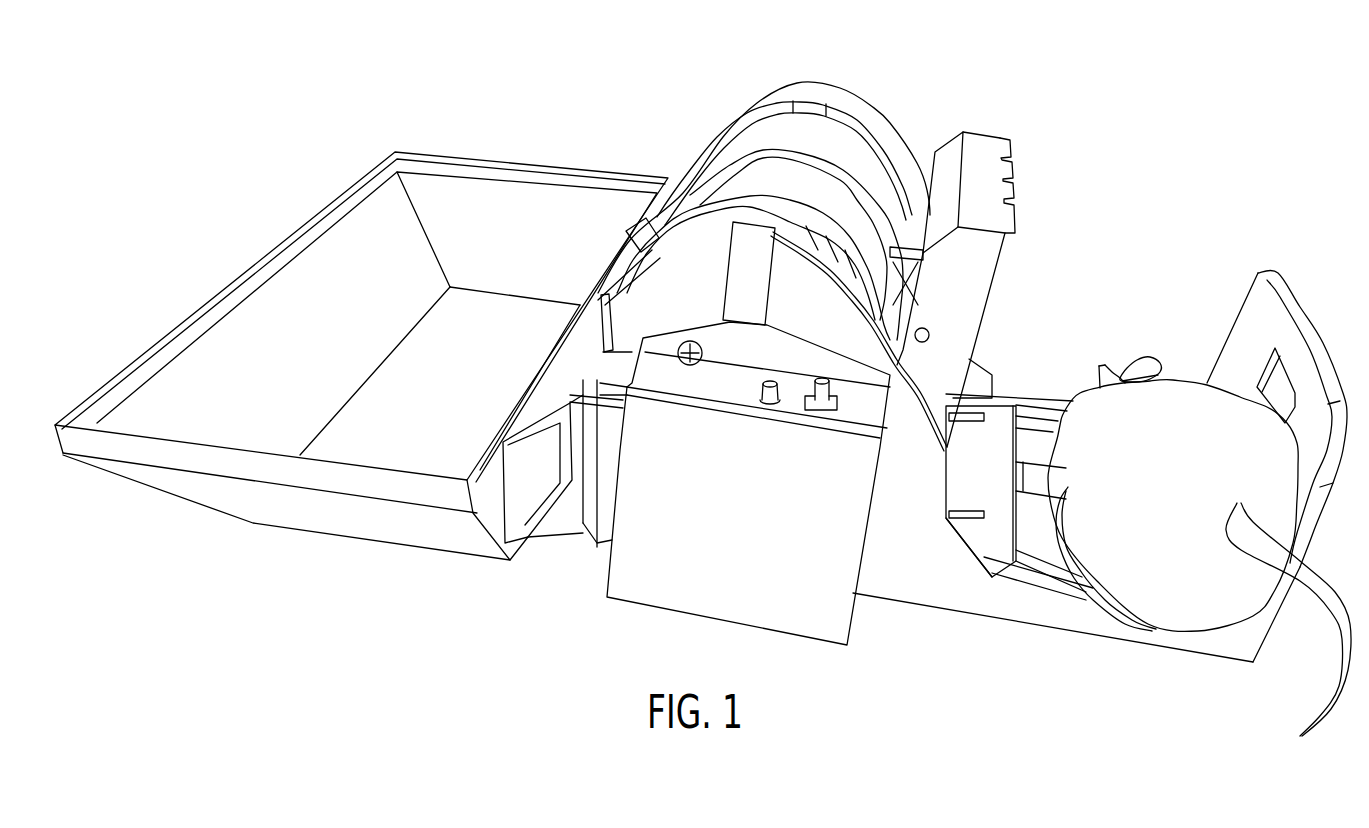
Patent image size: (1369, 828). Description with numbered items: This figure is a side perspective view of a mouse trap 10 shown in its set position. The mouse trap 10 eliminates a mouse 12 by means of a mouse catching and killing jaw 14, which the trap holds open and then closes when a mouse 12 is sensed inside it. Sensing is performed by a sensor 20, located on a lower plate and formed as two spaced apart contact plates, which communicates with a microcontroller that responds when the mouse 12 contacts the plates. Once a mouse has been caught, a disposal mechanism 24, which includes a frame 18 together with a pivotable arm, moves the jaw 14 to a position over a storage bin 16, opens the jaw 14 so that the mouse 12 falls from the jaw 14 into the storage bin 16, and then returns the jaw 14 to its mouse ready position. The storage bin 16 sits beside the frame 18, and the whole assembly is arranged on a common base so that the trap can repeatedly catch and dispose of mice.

The mouse trap 10 is at (1127, 166).
The mouse 12 is at (1206, 406).
The mouse catching and killing jaw 14 is at (980, 127).
The storage bin 16 is at (500, 195).
The frame 18 is at (936, 607).
The sensor 20 is at (1023, 431).
The disposal mechanism 24 is at (822, 80).